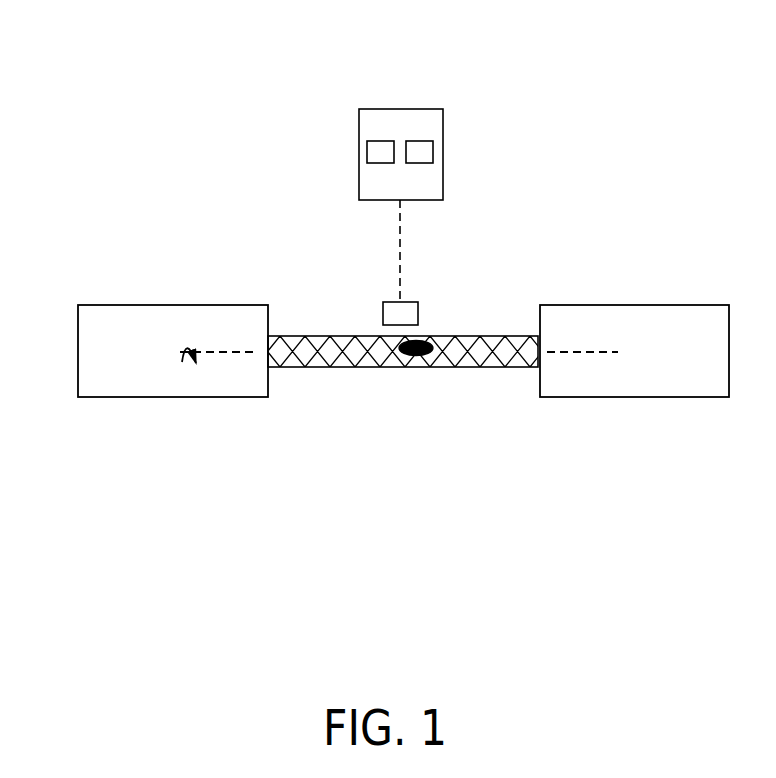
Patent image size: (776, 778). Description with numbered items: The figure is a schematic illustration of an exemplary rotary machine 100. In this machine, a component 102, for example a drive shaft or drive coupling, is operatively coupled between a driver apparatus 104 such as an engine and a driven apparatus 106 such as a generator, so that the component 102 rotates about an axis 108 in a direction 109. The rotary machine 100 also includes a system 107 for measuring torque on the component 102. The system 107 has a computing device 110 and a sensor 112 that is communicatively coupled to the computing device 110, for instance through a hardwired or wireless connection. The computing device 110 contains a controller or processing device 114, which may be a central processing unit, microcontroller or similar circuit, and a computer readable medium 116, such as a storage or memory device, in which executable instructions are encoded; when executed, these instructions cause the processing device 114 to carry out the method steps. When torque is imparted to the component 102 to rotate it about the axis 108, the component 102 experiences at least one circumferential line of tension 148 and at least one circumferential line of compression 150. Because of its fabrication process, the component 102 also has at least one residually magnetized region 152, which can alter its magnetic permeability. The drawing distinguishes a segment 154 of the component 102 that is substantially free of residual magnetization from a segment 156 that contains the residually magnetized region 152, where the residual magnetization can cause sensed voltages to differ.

The rotary machine 100 is at (152, 133).
The component 102 is at (315, 323).
The driver apparatus 104 is at (116, 296).
The driven apparatus 106 is at (637, 298).
The system for measuring torque 107 is at (487, 167).
The axis 108 is at (570, 352).
The direction 109 is at (190, 340).
The computing device 110 is at (350, 101).
The sensor 112 is at (373, 298).
The controller or processing device 114 is at (380, 141).
The computer readable medium 116 is at (418, 141).
The circumferential line of tension 148 is at (477, 358).
The circumferential line of compression 150 is at (447, 358).
The residually magnetized region 152 is at (415, 357).
The segment 154 is at (343, 380).
The segment 156 is at (434, 328).